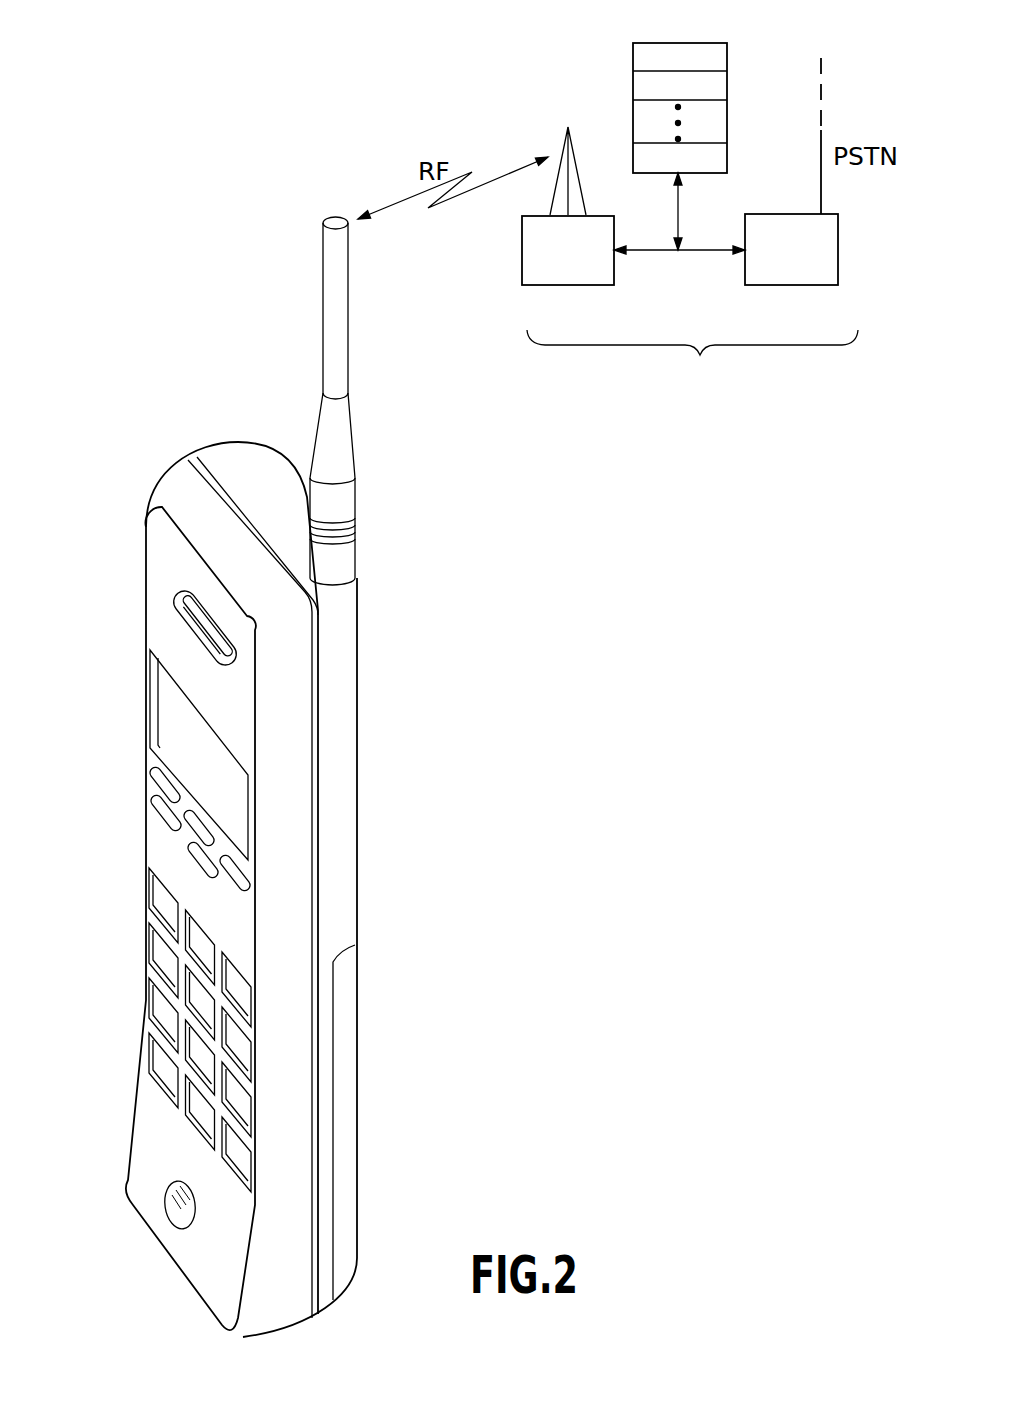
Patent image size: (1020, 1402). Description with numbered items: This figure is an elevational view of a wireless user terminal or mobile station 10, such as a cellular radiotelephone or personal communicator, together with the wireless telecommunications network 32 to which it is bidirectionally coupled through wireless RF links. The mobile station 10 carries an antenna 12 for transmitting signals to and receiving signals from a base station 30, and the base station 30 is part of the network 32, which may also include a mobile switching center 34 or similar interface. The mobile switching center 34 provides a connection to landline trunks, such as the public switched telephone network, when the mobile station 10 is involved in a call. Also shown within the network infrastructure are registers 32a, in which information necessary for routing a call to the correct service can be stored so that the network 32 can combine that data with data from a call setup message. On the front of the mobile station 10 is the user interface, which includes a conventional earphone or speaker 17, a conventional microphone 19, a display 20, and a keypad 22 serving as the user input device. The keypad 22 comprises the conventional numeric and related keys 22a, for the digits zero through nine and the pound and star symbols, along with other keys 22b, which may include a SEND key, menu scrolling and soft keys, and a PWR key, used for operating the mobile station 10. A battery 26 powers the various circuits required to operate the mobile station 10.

The mobile station 10 is at (124, 447).
The antenna 12 is at (330, 293).
The speaker 17 is at (190, 608).
The microphone 19 is at (173, 1215).
The display 20 is at (167, 717).
The keypad 22 is at (245, 1043).
The numeric and related keys 22a is at (162, 1060).
The other keys 22b is at (199, 832).
The battery 26 is at (352, 1103).
The base station 30 is at (572, 285).
The network 32 is at (692, 358).
The registers 32a is at (712, 43).
The mobile switching center 34 is at (774, 214).